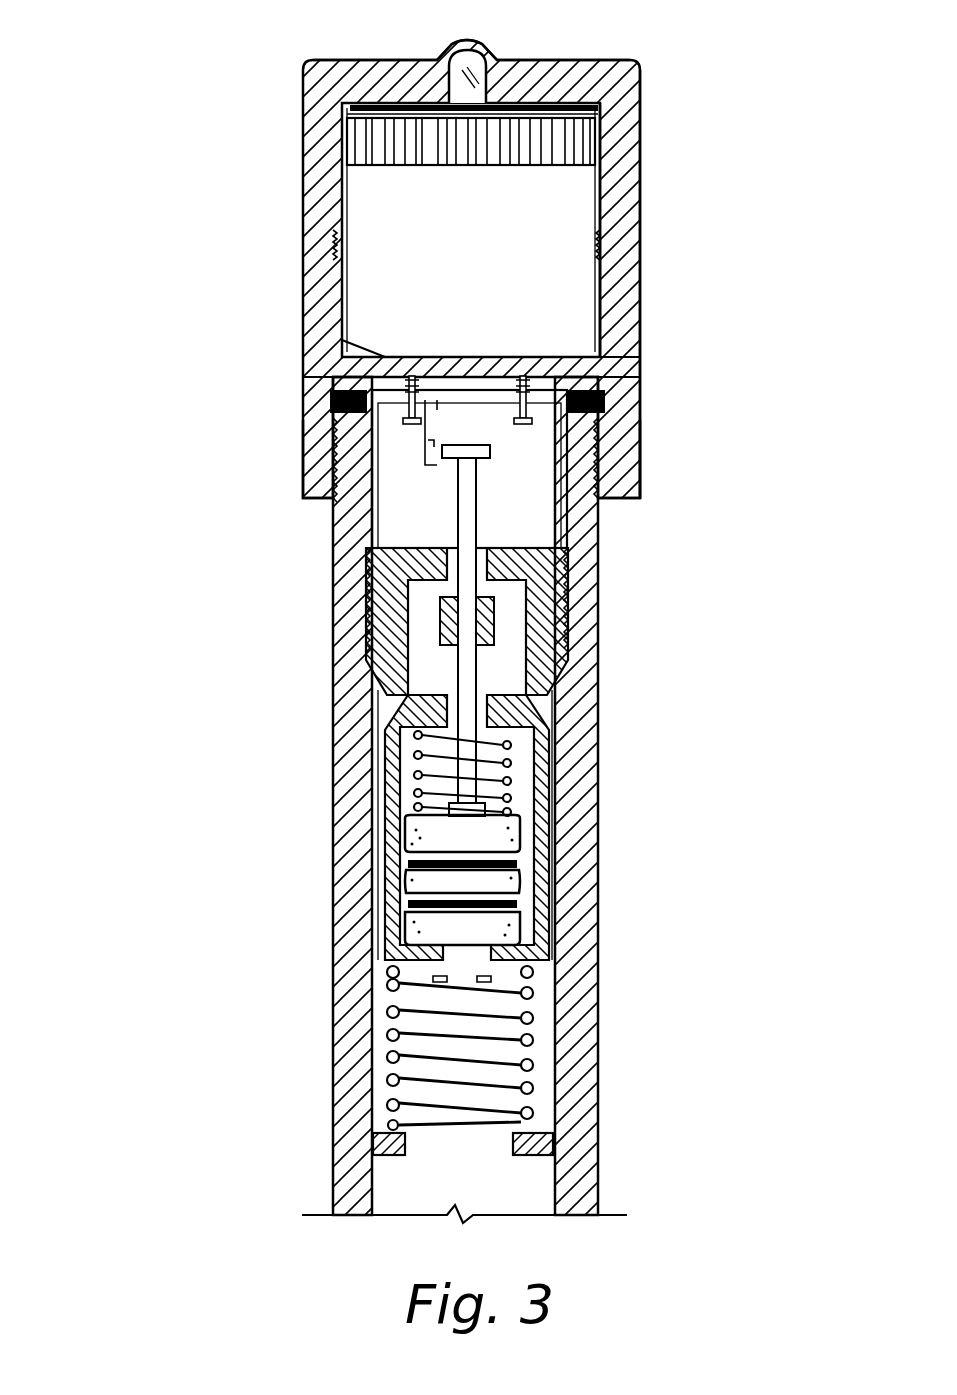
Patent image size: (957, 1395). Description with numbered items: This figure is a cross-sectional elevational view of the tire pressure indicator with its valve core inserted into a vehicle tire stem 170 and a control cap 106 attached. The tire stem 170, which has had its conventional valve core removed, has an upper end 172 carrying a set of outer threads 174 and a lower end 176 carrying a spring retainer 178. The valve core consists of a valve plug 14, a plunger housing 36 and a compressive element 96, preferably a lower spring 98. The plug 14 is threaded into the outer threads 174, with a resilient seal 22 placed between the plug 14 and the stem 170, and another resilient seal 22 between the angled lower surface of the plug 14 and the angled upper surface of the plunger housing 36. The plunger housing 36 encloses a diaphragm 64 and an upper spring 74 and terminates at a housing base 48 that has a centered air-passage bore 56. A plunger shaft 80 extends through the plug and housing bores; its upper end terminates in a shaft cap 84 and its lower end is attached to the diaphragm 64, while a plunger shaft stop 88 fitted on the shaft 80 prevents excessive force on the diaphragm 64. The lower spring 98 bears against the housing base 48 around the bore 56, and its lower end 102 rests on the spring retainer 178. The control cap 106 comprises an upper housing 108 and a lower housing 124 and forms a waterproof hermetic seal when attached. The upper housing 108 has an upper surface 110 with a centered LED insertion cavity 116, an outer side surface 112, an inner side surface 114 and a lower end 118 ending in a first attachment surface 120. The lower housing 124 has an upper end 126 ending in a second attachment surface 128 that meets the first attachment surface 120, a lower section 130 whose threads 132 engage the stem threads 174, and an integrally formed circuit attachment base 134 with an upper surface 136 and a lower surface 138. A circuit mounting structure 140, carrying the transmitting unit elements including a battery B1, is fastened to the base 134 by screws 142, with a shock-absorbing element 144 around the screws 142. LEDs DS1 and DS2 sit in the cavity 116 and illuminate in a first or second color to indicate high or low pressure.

The valve plug 14 is at (545, 585).
The resilient seal 22 is at (605, 404).
The plunger housing 36 is at (520, 823).
The housing base 48 is at (398, 958).
The air-passage bore 56 is at (463, 972).
The diaphragm 64 is at (485, 890).
The upper spring 74 is at (522, 752).
The plunger shaft 80 is at (465, 530).
The shaft cap 84 is at (462, 453).
The plunger shaft stop 88 is at (440, 622).
The compressive element 96 is at (540, 1040).
The lower spring 98 is at (581, 1048).
The lower end of lower spring 102 is at (550, 1122).
The control cap 106 is at (292, 287).
The upper housing 108 is at (332, 147).
The upper surface 110 is at (563, 60).
The outer side surface 112 is at (632, 210).
The inner side surface 114 is at (590, 182).
The LED insertion cavity 116 is at (447, 47).
The lower end 118 is at (340, 243).
The first attachment surface 120 is at (226, 249).
The lower housing 124 is at (630, 296).
The upper end 126 is at (632, 243).
The second attachment surface 128 is at (706, 248).
The lower section 130 is at (630, 447).
The threads 132 is at (330, 478).
The circuit attachment base 134 is at (330, 366).
The upper surface 136 is at (383, 355).
The lower surface 138 is at (348, 445).
The circuit mounting structure 140 is at (630, 377).
The screws 142 is at (643, 363).
The shock-absorbing element 144 is at (611, 371).
The vehicle tire stem 170 is at (345, 807).
The upper end 172 is at (630, 462).
The outer threads 174 is at (706, 459).
The lower end 176 is at (383, 1150).
The spring retainer 178 is at (256, 1130).
The battery B1 is at (565, 135).
The LED DS1 is at (453, 85).
The LED DS2 is at (338, 116).